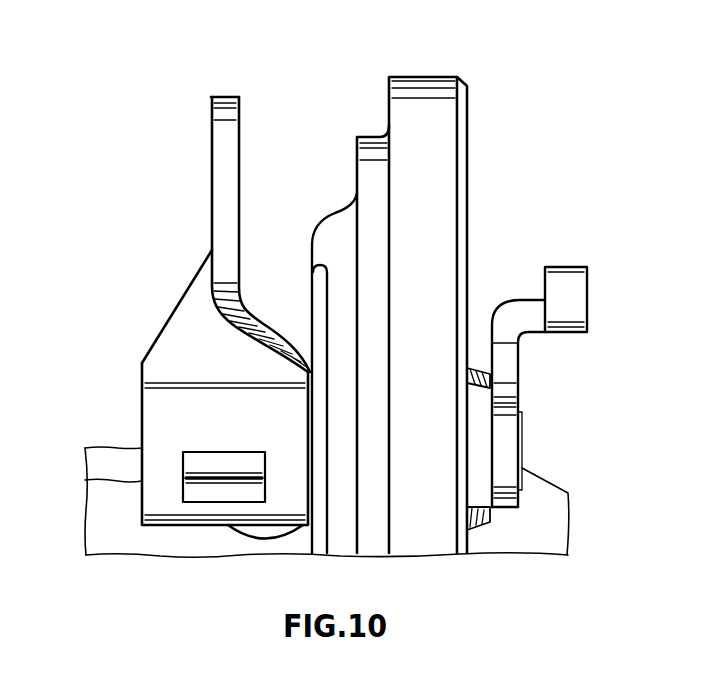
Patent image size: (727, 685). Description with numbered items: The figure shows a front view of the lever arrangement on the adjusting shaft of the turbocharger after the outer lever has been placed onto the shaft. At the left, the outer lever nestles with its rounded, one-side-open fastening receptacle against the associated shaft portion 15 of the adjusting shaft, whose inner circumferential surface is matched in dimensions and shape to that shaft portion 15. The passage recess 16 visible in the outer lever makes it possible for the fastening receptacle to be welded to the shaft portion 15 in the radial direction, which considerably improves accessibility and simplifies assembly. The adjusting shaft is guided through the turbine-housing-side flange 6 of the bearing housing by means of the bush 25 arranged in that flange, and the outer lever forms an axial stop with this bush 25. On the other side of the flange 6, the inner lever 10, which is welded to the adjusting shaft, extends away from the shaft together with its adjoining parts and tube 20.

The turbine-housing-side flange 6 is at (432, 163).
The inner lever 10 is at (510, 353).
The shaft portion 15 is at (203, 467).
The passage recess 16 is at (195, 489).
The tube 20 is at (225, 103).
The bush 25 is at (317, 385).